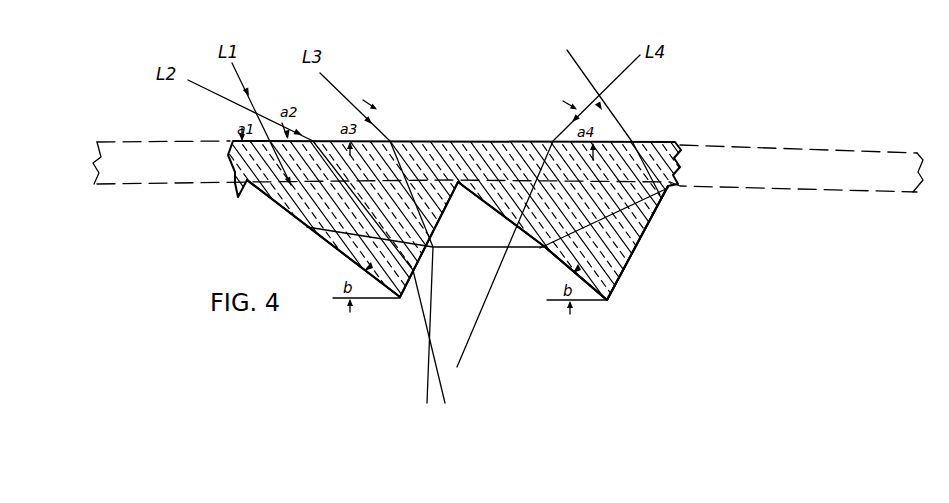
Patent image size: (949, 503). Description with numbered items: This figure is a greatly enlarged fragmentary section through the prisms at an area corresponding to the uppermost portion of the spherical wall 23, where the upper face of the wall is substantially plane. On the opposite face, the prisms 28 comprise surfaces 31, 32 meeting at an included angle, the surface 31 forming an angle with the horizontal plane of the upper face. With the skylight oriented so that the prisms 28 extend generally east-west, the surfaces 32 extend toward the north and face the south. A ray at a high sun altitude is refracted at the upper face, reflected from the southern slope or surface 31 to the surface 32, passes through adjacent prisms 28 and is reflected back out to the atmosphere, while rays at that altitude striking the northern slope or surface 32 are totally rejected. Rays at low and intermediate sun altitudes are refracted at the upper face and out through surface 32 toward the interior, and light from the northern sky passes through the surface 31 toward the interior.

The spherical wall 23 is at (655, 162).
The prisms 28 is at (620, 257).
The surface 31 is at (328, 247).
The surface 32 is at (437, 218).